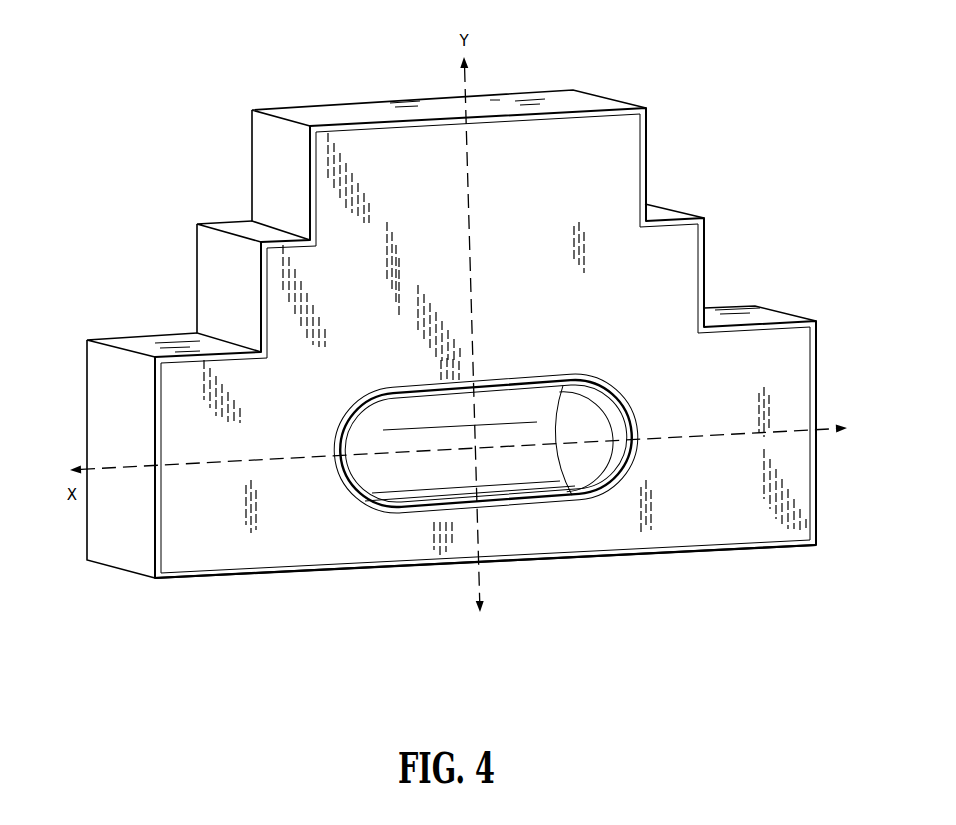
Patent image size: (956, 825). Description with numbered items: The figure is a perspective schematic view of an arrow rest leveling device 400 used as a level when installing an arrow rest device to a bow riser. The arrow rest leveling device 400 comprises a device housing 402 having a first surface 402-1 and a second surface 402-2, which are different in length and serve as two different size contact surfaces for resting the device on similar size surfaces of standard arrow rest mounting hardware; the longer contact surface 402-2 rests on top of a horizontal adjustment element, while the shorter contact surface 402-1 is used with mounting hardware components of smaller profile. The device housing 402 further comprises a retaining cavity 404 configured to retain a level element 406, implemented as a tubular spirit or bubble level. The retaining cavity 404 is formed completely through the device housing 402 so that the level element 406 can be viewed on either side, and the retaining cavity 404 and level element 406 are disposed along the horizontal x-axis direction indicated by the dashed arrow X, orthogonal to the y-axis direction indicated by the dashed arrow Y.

The arrow rest leveling device 400 is at (451, 339).
The device housing 402 is at (451, 339).
The first surface 402-1 is at (381, 98).
The second surface 402-2 is at (323, 577).
The retaining cavity 404 is at (525, 484).
The level element 406 is at (511, 467).